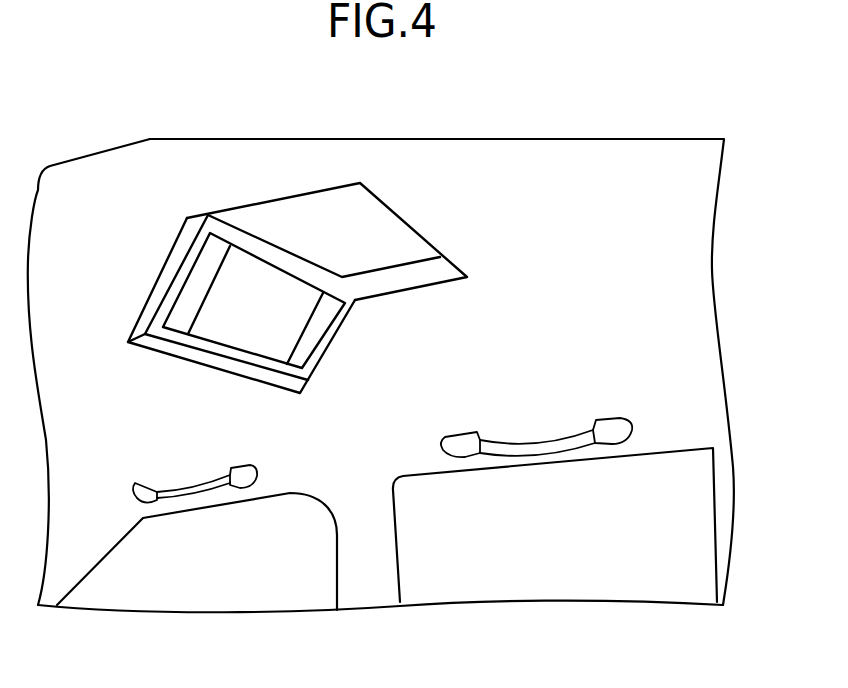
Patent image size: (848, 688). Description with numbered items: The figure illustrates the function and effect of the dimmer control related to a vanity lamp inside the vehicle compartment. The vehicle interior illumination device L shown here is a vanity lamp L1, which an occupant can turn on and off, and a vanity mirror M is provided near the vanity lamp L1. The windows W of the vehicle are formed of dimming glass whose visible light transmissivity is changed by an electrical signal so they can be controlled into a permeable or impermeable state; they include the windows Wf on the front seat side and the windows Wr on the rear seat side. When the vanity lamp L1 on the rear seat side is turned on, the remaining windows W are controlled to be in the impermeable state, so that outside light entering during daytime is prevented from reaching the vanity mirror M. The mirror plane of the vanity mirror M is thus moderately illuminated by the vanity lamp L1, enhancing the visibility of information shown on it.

The vehicle interior illumination device L is at (297, 236).
The vanity lamp L1 is at (208, 297).
The vanity mirror M is at (263, 301).
The windows W is at (387, 549).
The windows on the front seat side Wf is at (255, 563).
The windows on the rear seat side Wr is at (548, 563).